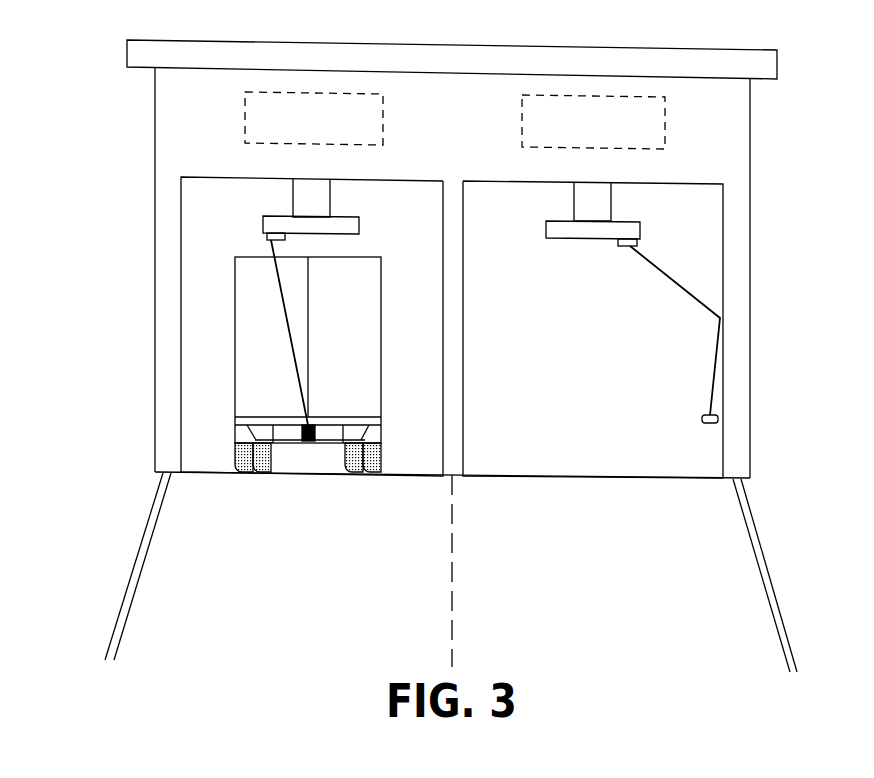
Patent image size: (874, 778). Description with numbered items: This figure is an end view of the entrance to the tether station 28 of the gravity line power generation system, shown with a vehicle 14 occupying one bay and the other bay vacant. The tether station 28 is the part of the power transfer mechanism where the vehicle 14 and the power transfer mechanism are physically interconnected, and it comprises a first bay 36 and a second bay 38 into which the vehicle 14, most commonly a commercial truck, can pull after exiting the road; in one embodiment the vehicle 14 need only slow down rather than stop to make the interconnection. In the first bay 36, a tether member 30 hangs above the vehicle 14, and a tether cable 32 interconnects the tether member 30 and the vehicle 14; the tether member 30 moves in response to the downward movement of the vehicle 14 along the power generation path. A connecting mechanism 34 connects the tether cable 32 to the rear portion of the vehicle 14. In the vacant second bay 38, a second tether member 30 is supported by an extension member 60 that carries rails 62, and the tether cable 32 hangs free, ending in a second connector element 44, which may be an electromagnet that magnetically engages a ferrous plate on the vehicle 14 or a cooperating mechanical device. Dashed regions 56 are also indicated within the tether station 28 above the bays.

The tether station 28 is at (762, 142).
The electrical receptacle 56 is at (296, 124).
The first bay 36 is at (202, 216).
The second bay 38 is at (701, 250).
The tether member 30 is at (268, 237).
The tether cable 32 is at (280, 308).
The vehicle 14 is at (248, 392).
The connecting mechanism 34 is at (298, 459).
The extension member 60 is at (595, 207).
The rails 62 is at (560, 239).
The second connector element 44 is at (722, 413).